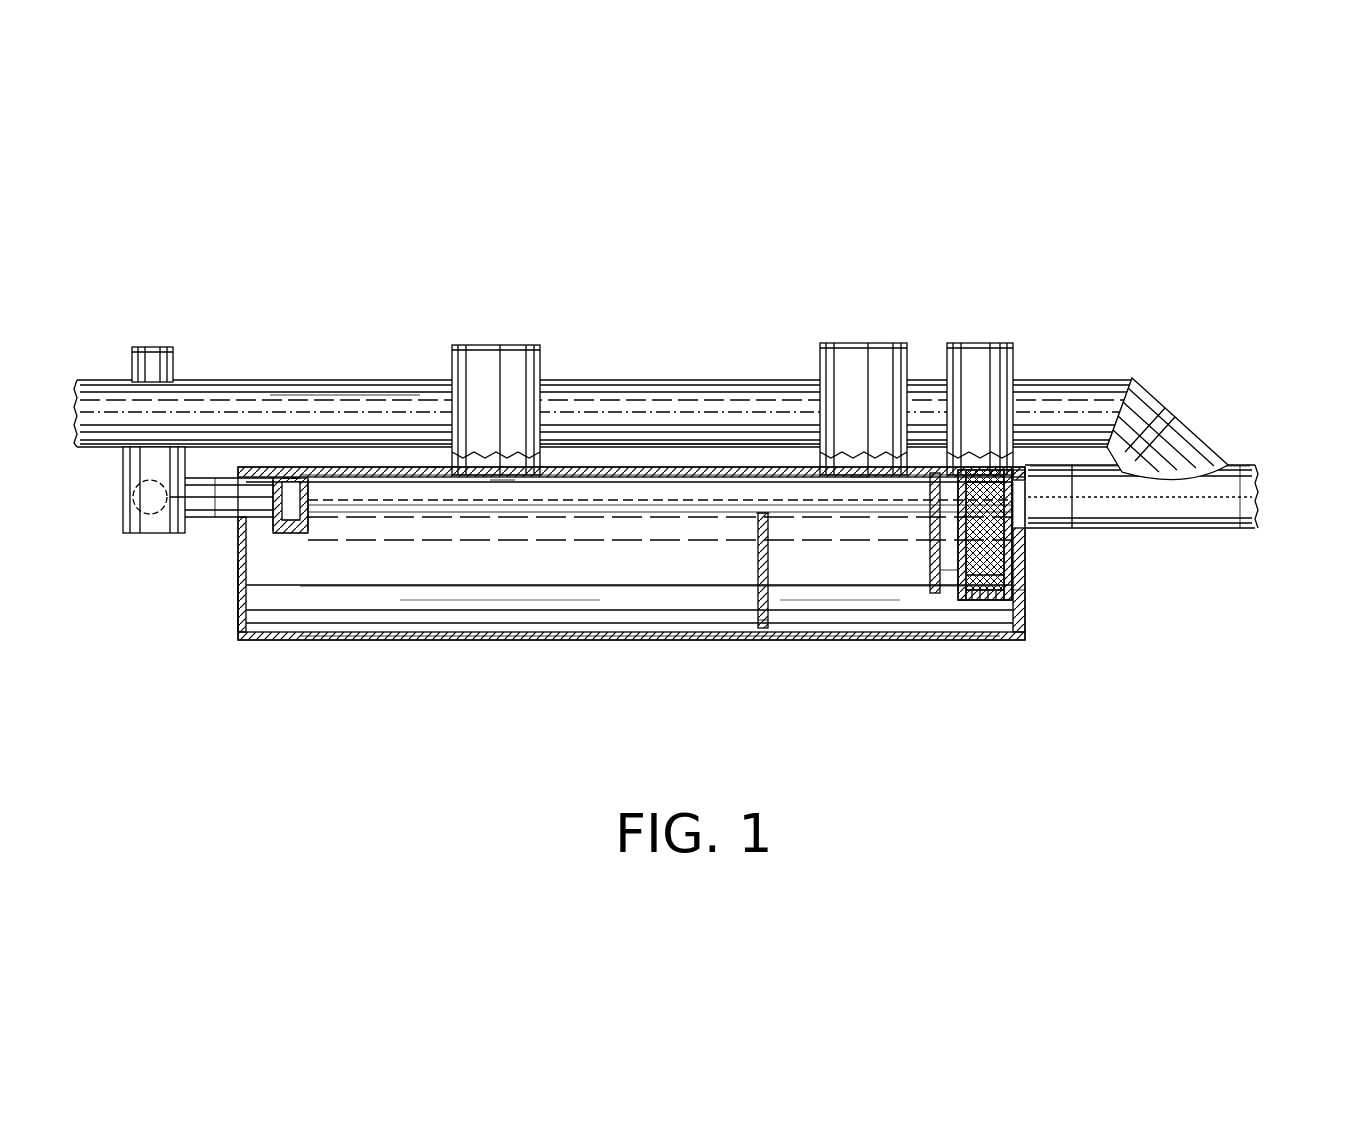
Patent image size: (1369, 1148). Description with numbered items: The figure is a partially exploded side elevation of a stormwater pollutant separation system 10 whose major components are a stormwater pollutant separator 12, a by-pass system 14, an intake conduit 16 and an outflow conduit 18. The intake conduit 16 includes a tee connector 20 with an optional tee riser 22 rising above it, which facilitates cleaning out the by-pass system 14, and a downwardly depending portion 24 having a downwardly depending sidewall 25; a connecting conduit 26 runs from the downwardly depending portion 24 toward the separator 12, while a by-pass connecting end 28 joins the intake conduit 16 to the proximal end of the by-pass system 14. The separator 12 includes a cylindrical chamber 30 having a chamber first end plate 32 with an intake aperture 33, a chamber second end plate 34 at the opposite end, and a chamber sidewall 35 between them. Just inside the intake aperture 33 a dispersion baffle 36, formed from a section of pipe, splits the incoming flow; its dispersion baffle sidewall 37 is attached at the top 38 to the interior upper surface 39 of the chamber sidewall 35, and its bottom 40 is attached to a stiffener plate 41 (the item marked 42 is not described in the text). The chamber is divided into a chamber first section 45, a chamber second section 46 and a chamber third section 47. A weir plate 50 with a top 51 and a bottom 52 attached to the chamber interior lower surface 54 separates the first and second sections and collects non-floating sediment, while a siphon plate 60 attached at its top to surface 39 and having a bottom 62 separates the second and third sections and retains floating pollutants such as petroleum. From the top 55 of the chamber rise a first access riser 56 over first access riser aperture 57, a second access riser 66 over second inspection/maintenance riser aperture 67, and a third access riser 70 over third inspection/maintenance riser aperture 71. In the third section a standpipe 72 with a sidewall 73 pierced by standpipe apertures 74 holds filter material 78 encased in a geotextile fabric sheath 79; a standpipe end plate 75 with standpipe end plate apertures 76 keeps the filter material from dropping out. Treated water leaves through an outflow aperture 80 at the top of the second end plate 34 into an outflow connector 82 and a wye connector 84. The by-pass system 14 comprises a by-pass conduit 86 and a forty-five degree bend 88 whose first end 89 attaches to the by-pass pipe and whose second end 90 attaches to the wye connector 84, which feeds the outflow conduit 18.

The stormwater pollutant separation system 10 is at (678, 237).
The stormwater pollutant separator 12 is at (848, 718).
The by-pass system 14 is at (700, 345).
The intake conduit 16 is at (100, 385).
The outflow conduit 18 is at (1232, 468).
The tee connector 20 is at (222, 380).
The tee riser 22 is at (160, 347).
The downwardly depending portion 24 is at (123, 527).
The downwardly depending sidewall 25 is at (126, 492).
The connecting conduit 26 is at (193, 507).
The by-pass connecting end 28 is at (268, 395).
The chamber 30 is at (468, 603).
The chamber first end plate 32 is at (238, 623).
The intake aperture 33 is at (250, 535).
The chamber second end plate 34 is at (1012, 585).
The chamber sidewall 35 is at (650, 473).
The dispersion baffle 36 is at (308, 503).
The dispersion baffle sidewall 37 is at (310, 490).
The top 38 is at (297, 478).
The interior upper surface 39 is at (432, 478).
The bottom 40 is at (320, 540).
The stiffener plate 41 is at (300, 535).
The bushing 42 is at (220, 510).
The chamber first section 45 is at (567, 585).
The chamber second section 46 is at (795, 600).
The chamber third section 47 is at (1020, 570).
The weir plate 50 is at (743, 600).
The top 51 is at (760, 512).
The bottom 52 is at (763, 628).
The chamber interior lower surface 54 is at (613, 600).
The top 55 is at (580, 455).
The first access riser 56 is at (505, 345).
The first access riser aperture 57 is at (503, 467).
The siphon plate 60 is at (935, 595).
The bottom 62 is at (950, 600).
The second access riser 66 is at (832, 343).
The second inspection/maintenance riser aperture 67 is at (853, 478).
The third access riser 70 is at (985, 343).
The third inspection/maintenance riser aperture 71 is at (968, 470).
The standpipe 72 is at (958, 540).
The sidewall 73 is at (962, 580).
The standpipe apertures 74 is at (961, 490).
The standpipe end plate 75 is at (1005, 600).
The standpipe end plate apertures 76 is at (985, 598).
The filter material 78 is at (1010, 525).
The geotextile fabric sheath 79 is at (1003, 580).
The outflow aperture 80 is at (1050, 447).
The outflow connector 82 is at (1055, 503).
The wye connector 84 is at (1227, 530).
The by-pass conduit 86 is at (428, 380).
The bend 88 is at (1135, 397).
The first end 89 is at (1070, 465).
The second end 90 is at (1167, 412).